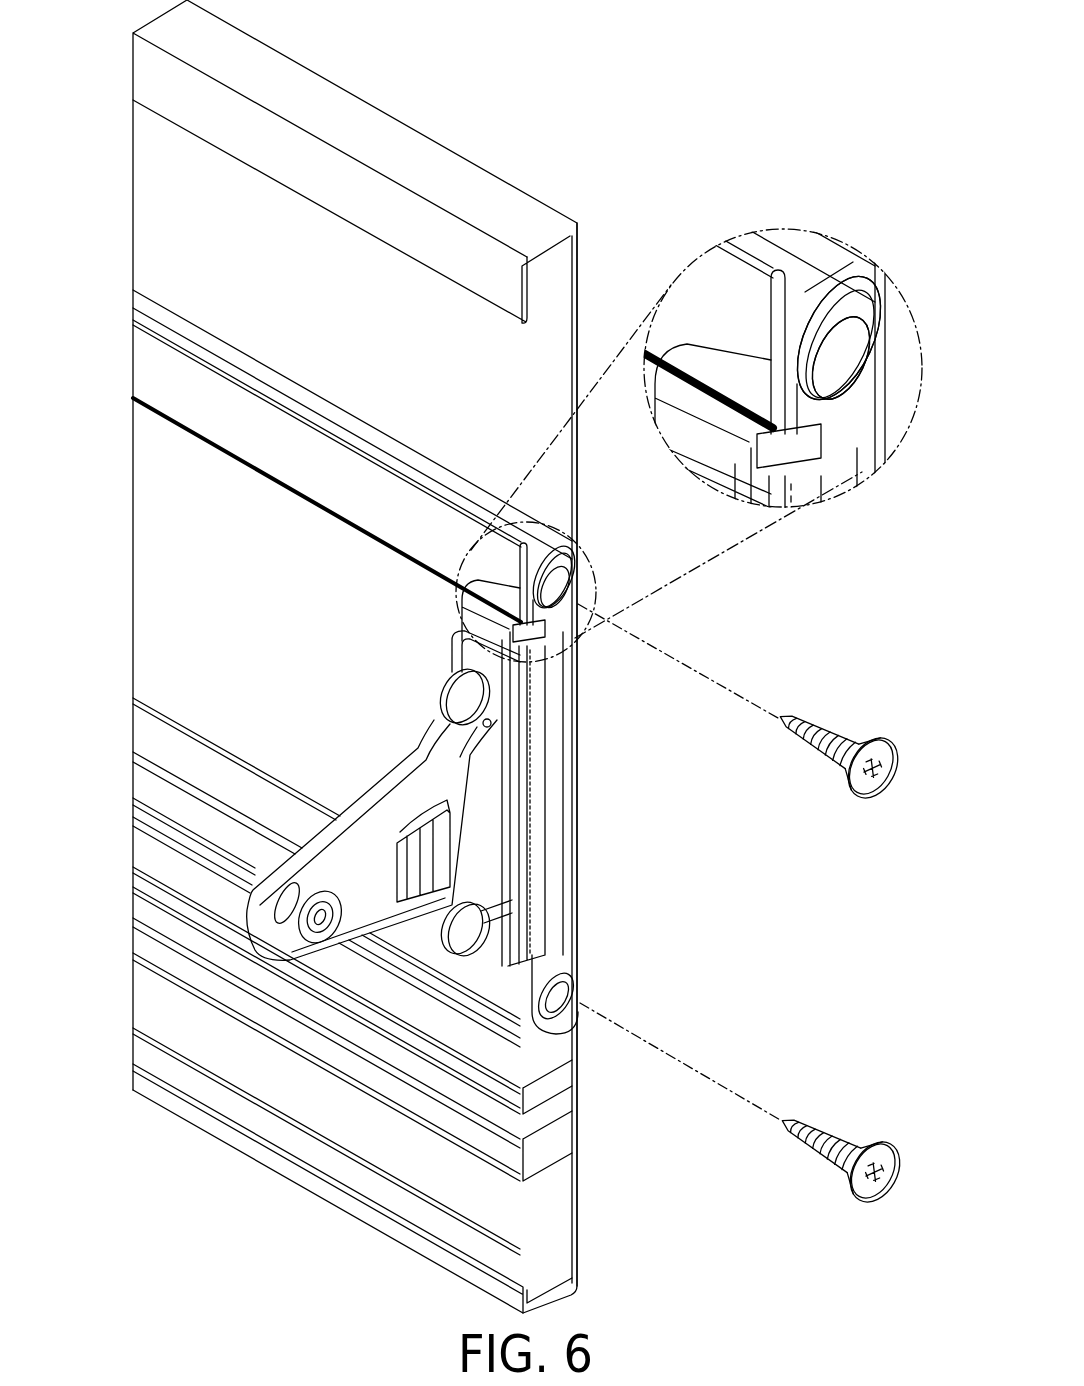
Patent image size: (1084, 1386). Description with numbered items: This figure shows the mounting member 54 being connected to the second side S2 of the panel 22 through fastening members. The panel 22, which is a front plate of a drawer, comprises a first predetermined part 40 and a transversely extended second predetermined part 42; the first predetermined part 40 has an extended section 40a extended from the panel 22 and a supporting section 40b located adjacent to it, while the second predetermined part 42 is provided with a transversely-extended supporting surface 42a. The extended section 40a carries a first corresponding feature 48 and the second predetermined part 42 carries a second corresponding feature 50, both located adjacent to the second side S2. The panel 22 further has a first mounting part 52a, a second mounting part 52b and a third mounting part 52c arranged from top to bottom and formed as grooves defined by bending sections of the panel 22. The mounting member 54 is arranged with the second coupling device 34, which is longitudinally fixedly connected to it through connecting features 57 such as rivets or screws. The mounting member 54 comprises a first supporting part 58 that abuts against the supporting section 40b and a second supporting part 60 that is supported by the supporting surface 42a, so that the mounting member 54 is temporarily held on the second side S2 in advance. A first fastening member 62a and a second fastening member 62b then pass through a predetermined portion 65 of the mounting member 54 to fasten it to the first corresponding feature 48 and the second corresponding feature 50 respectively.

The panel 22 is at (165, 535).
The second coupling device 34 is at (240, 908).
The first predetermined part 40 is at (880, 290).
The extended section 40a is at (833, 323).
The supporting section 40b is at (443, 560).
The second predetermined part 42 is at (560, 1100).
The supporting surface 42a is at (527, 1127).
The first corresponding feature 48 is at (830, 370).
The second corresponding feature 50 is at (578, 1010).
The first mounting part 52a is at (545, 256).
The second mounting part 52b is at (530, 1035).
The third mounting part 52c is at (530, 1277).
The mounting member 54 is at (598, 950).
The connecting feature 57 is at (460, 697).
The first supporting part 58 is at (497, 600).
The second supporting part 60 is at (515, 963).
The first fastening member 62a is at (857, 722).
The second fastening member 62b is at (858, 1130).
The predetermined portion 65 is at (553, 765).
The second side S2 is at (584, 245).